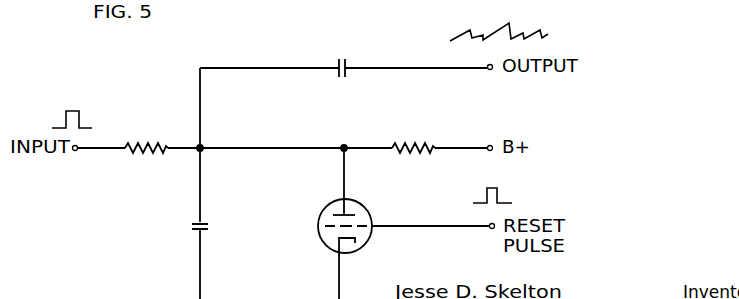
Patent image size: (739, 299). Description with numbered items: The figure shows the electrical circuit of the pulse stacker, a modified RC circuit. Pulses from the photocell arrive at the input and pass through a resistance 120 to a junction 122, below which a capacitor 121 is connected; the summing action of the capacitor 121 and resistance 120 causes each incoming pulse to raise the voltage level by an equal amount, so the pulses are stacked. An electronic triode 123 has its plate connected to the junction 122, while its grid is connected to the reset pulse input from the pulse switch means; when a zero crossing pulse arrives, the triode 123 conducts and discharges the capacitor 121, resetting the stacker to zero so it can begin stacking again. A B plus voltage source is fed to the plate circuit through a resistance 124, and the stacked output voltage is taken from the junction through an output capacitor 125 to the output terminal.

The resistance 120 is at (148, 143).
The capacitor 121 is at (203, 227).
The junction 122 is at (201, 147).
The electronic triode 123 is at (361, 206).
The resistance 124 is at (421, 144).
The output capacitor 125 is at (339, 58).